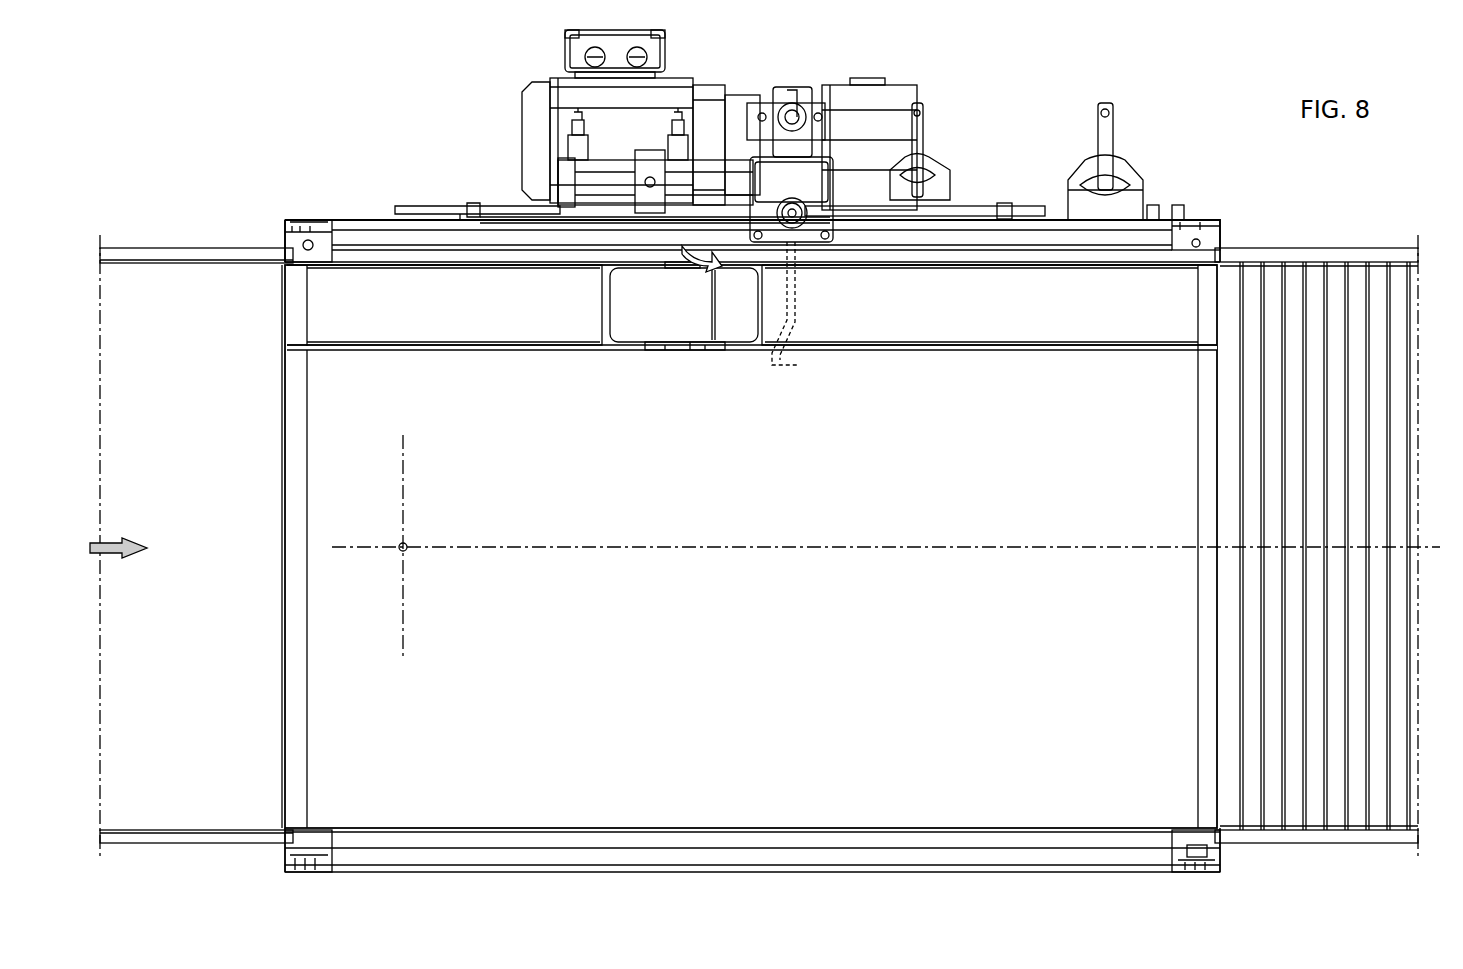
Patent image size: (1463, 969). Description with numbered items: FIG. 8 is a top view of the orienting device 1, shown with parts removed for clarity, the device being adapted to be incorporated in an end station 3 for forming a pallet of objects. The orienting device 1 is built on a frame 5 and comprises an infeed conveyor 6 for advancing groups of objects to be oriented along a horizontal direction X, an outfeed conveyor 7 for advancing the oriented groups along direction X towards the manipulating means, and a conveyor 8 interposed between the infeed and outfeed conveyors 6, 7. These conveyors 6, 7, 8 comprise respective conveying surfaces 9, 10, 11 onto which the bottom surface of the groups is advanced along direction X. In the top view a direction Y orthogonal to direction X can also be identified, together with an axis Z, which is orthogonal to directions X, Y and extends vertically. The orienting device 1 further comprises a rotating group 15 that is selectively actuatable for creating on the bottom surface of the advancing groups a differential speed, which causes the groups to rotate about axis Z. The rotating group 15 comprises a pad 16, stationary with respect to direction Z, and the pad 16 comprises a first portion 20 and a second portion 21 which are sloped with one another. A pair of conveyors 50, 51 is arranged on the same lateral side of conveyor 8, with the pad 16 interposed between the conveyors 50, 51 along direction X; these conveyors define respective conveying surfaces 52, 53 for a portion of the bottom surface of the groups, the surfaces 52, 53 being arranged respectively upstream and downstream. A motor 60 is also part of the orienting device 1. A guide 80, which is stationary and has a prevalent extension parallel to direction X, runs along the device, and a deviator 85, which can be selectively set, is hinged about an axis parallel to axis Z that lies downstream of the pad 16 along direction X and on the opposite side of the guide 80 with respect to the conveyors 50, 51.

The orienting device 1 is at (992, 107).
The end station 3 is at (1177, 95).
The frame 5 is at (702, 175).
The infeed conveyor 6 is at (205, 282).
The outfeed conveyor 7 is at (1333, 342).
The conveyor 8 is at (902, 775).
The conveying surface 9 is at (168, 797).
The conveying surface 10 is at (1292, 780).
The conveying surface 11 is at (485, 790).
The rotating group 15 is at (673, 230).
The pad 16 is at (650, 292).
The first portion 20 is at (622, 302).
The second portion 21 is at (738, 283).
The conveyor 50 is at (418, 312).
The conveyor 51 is at (1160, 300).
The conveying surface 52 is at (360, 298).
The conveying surface 53 is at (950, 302).
The motor 60 is at (598, 95).
The guide 80 is at (1053, 247).
The deviator 85 is at (853, 210).
The direction X is at (1438, 556).
The direction Y is at (400, 471).
The axis Z is at (400, 544).